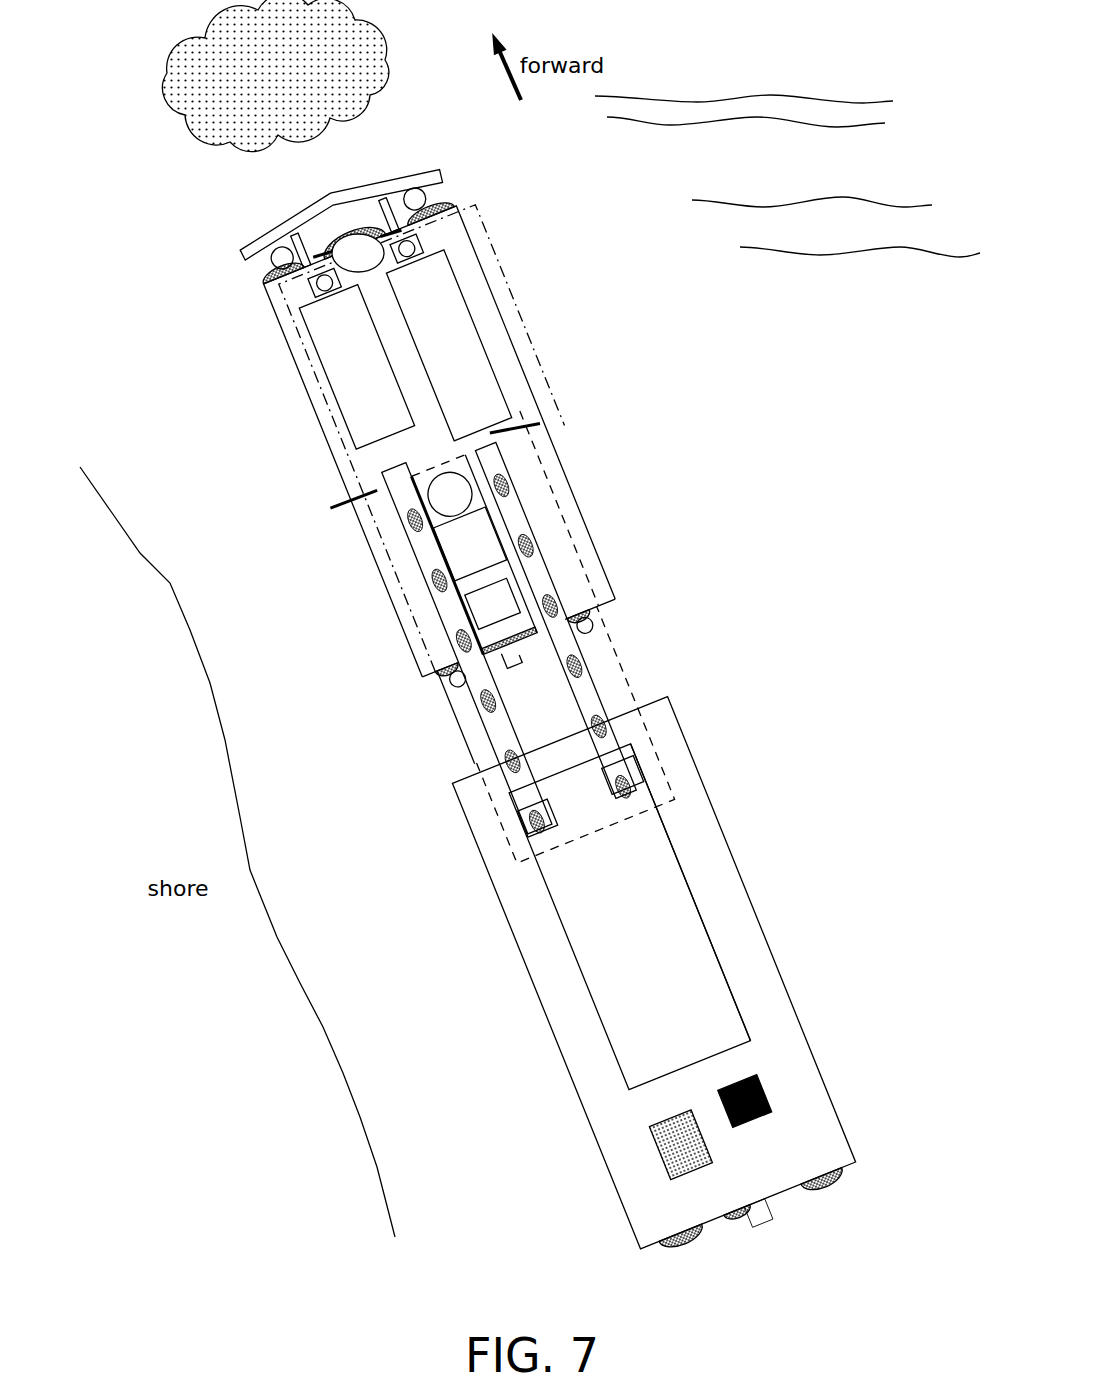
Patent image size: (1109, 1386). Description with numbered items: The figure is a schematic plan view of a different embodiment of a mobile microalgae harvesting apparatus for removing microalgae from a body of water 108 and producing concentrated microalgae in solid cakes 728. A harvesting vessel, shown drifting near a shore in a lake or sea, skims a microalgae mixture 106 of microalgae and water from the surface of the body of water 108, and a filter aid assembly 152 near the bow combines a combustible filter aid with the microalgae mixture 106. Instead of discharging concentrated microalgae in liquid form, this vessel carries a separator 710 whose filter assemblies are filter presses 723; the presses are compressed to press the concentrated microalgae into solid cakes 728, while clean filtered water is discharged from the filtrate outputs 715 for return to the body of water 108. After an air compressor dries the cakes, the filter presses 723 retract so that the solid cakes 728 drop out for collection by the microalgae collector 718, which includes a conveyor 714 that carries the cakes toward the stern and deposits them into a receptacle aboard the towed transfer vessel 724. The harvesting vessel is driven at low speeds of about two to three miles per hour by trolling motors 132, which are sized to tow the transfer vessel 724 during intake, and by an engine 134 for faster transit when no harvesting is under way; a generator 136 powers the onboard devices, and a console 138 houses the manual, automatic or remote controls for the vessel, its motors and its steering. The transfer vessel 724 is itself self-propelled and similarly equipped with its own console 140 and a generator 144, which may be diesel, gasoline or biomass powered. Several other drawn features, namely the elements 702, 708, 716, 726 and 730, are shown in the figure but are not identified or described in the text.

The microalgae mixture 106 is at (160, 97).
The body of water 108 is at (787, 157).
The trolling motors 132 is at (585, 622).
The engine 134 is at (673, 650).
The generator 136 is at (469, 544).
The console 138 is at (493, 603).
The console 140 is at (768, 1110).
The generator 144 is at (670, 1152).
The filter aid assembly 152 is at (358, 253).
The wing member 702 is at (283, 230).
The alternate position outline 708 is at (474, 218).
The separator 710 is at (303, 350).
The conveyor 714 is at (447, 612).
The filtrate outputs 715 is at (348, 493).
The roller rail 716 is at (522, 488).
The microalgae collector 718 is at (518, 845).
The filter presses 723 is at (447, 332).
The transfer vessel 724 is at (722, 820).
The hull deck edge 726 is at (697, 900).
The solid cakes 728 is at (643, 955).
The connecting rod 730 is at (467, 732).